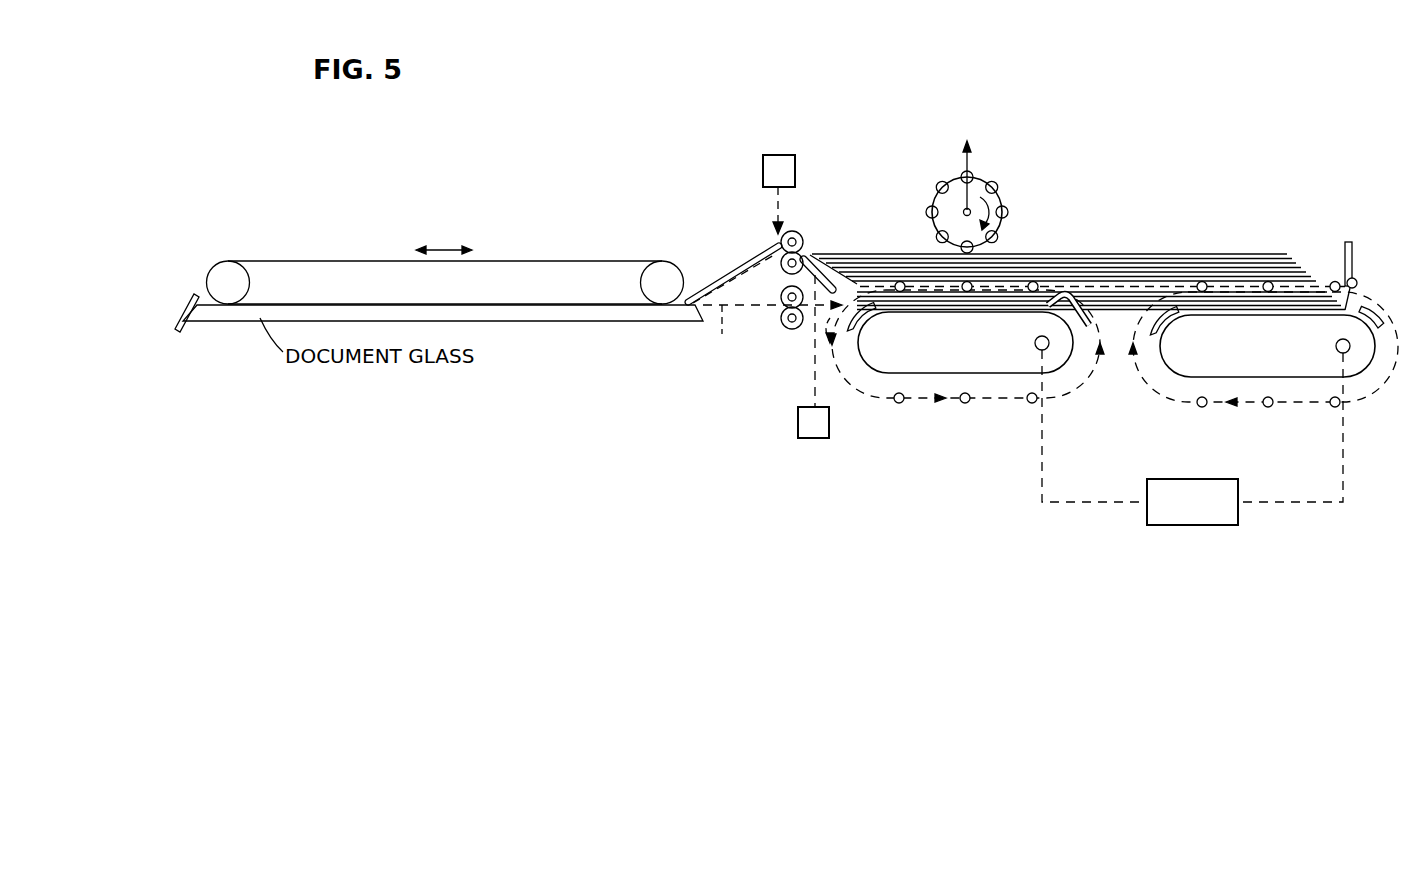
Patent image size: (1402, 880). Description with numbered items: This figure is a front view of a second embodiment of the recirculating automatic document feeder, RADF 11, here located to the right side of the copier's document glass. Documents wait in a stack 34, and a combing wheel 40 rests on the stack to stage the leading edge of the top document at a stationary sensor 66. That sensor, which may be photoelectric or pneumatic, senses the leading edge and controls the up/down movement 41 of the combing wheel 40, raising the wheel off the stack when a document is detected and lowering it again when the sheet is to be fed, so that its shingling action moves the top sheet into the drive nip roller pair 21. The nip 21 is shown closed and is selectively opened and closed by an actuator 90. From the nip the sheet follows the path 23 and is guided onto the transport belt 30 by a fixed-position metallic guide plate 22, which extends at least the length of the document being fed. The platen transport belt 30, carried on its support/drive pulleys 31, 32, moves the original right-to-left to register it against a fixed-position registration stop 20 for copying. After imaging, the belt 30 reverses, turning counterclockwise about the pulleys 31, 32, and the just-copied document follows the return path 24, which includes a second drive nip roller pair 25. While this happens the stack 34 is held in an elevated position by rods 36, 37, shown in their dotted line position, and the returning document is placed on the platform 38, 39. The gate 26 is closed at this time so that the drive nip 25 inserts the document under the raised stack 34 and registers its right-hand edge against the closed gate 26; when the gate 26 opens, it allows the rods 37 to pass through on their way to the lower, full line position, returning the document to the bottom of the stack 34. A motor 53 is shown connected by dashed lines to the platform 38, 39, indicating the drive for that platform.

The RADF 11 is at (1182, 160).
The registration stop 20 is at (190, 299).
The drive nip roller pair 21 is at (806, 238).
The guide plate 22 is at (741, 262).
The path 23 is at (724, 284).
The path 24 is at (719, 330).
The drive nip roller pair 25 is at (777, 320).
The gate 26 is at (1360, 276).
The transport belt 30 is at (527, 261).
The support/drive pulley 31 is at (646, 282).
The support/drive pulley 32 is at (246, 282).
The stack 34 is at (1210, 252).
The rods 36 is at (1030, 404).
The rods 37 is at (1333, 406).
The platform 38 is at (945, 311).
The platform 39 is at (1243, 313).
The combing wheel 40 is at (996, 208).
The up/down movement 41 is at (969, 163).
The motor 53 is at (1238, 484).
The stationary sensor 66 is at (795, 160).
The actuator 90 is at (829, 438).